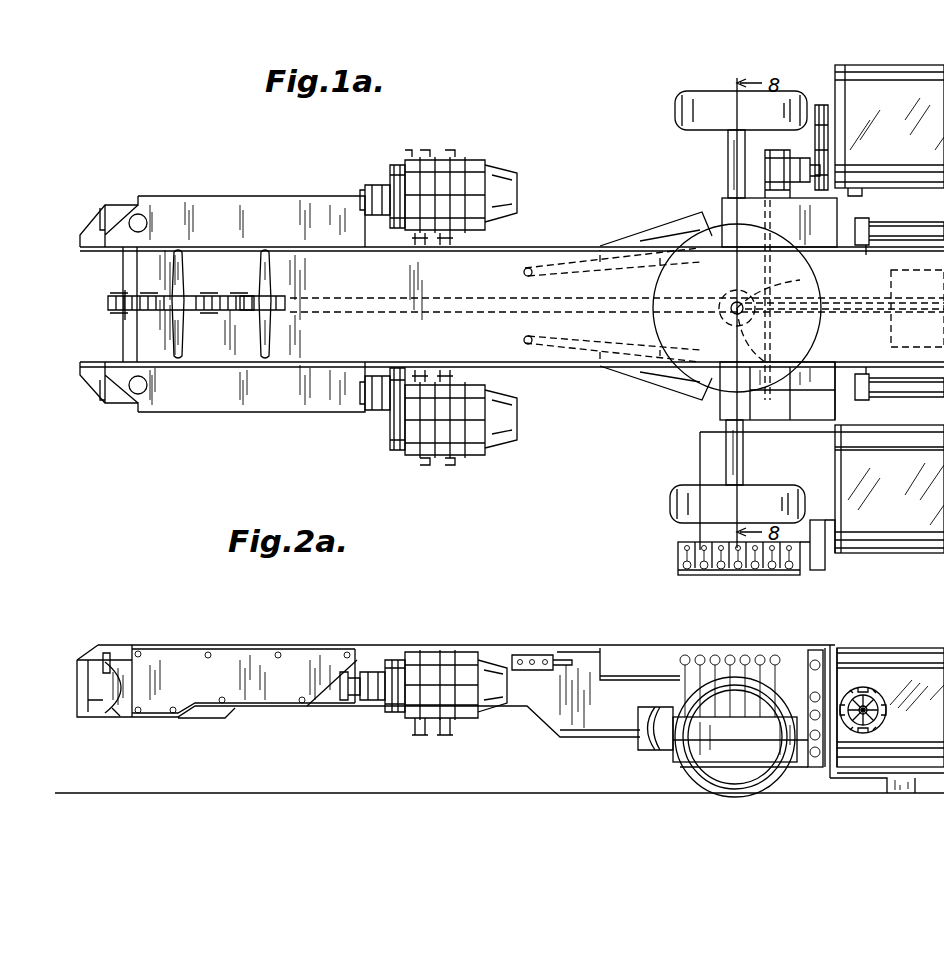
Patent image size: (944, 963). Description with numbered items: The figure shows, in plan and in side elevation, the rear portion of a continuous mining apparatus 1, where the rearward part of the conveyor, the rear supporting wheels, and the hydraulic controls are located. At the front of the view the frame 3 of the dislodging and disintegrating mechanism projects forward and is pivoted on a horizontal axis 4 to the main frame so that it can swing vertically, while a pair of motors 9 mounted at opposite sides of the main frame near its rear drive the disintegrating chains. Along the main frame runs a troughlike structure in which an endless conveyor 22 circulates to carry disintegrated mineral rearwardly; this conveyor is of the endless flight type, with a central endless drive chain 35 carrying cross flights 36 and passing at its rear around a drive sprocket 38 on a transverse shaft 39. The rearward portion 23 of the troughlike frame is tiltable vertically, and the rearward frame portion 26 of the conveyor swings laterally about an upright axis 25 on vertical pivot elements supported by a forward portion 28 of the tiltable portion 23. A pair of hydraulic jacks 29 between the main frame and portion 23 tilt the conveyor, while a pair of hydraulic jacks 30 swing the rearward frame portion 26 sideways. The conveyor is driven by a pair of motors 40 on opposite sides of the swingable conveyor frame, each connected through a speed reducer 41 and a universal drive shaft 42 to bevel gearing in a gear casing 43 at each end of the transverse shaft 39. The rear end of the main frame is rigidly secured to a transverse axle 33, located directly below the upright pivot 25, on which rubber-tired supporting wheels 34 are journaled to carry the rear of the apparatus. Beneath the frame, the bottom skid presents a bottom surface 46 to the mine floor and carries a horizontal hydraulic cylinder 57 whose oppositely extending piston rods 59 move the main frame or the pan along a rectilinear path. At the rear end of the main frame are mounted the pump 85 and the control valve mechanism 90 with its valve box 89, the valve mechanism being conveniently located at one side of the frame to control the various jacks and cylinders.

In FIG. 2A, the machine 1 is at (900, 806).
In FIG. 2A, the frame 3 is at (607, 720).
In FIG. 1A, the horizontal pivot axis 4 is at (734, 318).
In FIG. 1A, the motors 9 is at (898, 78).
In FIG. 2A, the motors 9 is at (887, 723).
In FIG. 1A, the endless conveyor 22 is at (246, 312).
In FIG. 1A, the rearward portion of troughlike frame structure 23 is at (330, 270).
In FIG. 1A, the upright axis 25 is at (745, 305).
In FIG. 1A, the rearward frame portion of the conveyor 26 is at (225, 247).
In FIG. 2A, the rearward frame portion of the conveyor 26 is at (378, 658).
In FIG. 1A, the forward portion of the tiltable frame portion 28 is at (848, 362).
In FIG. 2A, the forward portion of the tiltable frame portion 28 is at (828, 655).
In FIG. 1A, the hydraulic jacks 29 is at (915, 222).
In FIG. 1A, the hydraulic jacks 30 is at (637, 244).
In FIG. 1A, the transverse axle 33 is at (726, 440).
In FIG. 1A, the supporting wheels 34 is at (675, 109).
In FIG. 2A, the supporting wheels 34 is at (692, 772).
In FIG. 1A, the endless drive chain 35 is at (185, 300).
In FIG. 1A, the cross flights 36 is at (271, 328).
In FIG. 1A, the drive sprocket 38 is at (108, 304).
In FIG. 1A, the transverse shaft 39 is at (123, 278).
In FIG. 1A, the motors 40 is at (470, 162).
In FIG. 2A, the motors 40 is at (462, 680).
In FIG. 1A, the speed reducers 41 is at (392, 180).
In FIG. 2A, the speed reducers 41 is at (395, 705).
In FIG. 2A, the universal drive shafts 42 is at (340, 690).
In FIG. 1A, the gear casings 43 is at (118, 218).
In FIG. 2A, the gear casings 43 is at (118, 695).
In FIG. 2A, the bottom surface 46 is at (915, 793).
In FIG. 1A, the horizontal hydraulic cylinder 57 is at (934, 325).
In FIG. 1A, the piston rods 59 is at (845, 302).
In FIG. 1A, the pump 85 is at (765, 172).
In FIG. 1A, the valve box 89 is at (796, 572).
In FIG. 2A, the valve box 89 is at (793, 770).
In FIG. 1A, the control valve mechanism 90 is at (678, 560).
In FIG. 2A, the control valve mechanism 90 is at (673, 748).